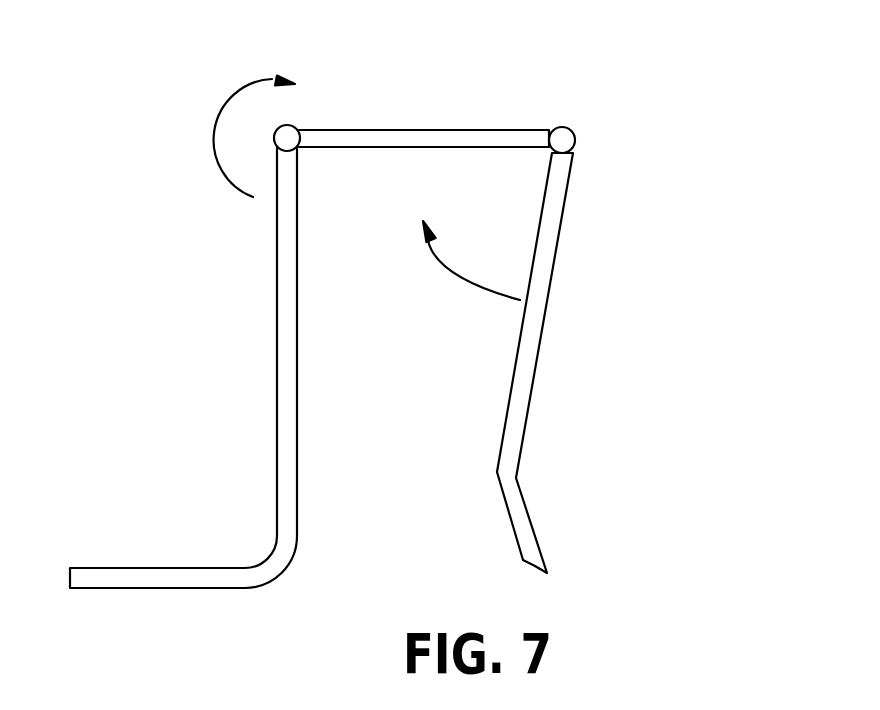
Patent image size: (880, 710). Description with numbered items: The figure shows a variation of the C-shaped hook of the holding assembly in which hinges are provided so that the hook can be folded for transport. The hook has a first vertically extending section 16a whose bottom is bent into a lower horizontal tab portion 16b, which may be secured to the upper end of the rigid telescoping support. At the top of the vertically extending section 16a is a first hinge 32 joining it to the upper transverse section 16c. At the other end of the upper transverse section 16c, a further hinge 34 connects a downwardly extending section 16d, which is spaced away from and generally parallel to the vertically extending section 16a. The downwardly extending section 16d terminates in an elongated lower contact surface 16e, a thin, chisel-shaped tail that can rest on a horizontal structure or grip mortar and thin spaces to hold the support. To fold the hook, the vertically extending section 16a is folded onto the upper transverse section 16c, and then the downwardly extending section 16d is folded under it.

The first vertically extending section 16a is at (277, 347).
The lower horizontal tab portion 16b is at (288, 566).
The upper transverse section 16c is at (423, 128).
The downwardly extending section 16d is at (543, 313).
The elongated lower contact surface 16e is at (535, 567).
The first hinge 32 is at (287, 138).
The further hinge 34 is at (562, 140).